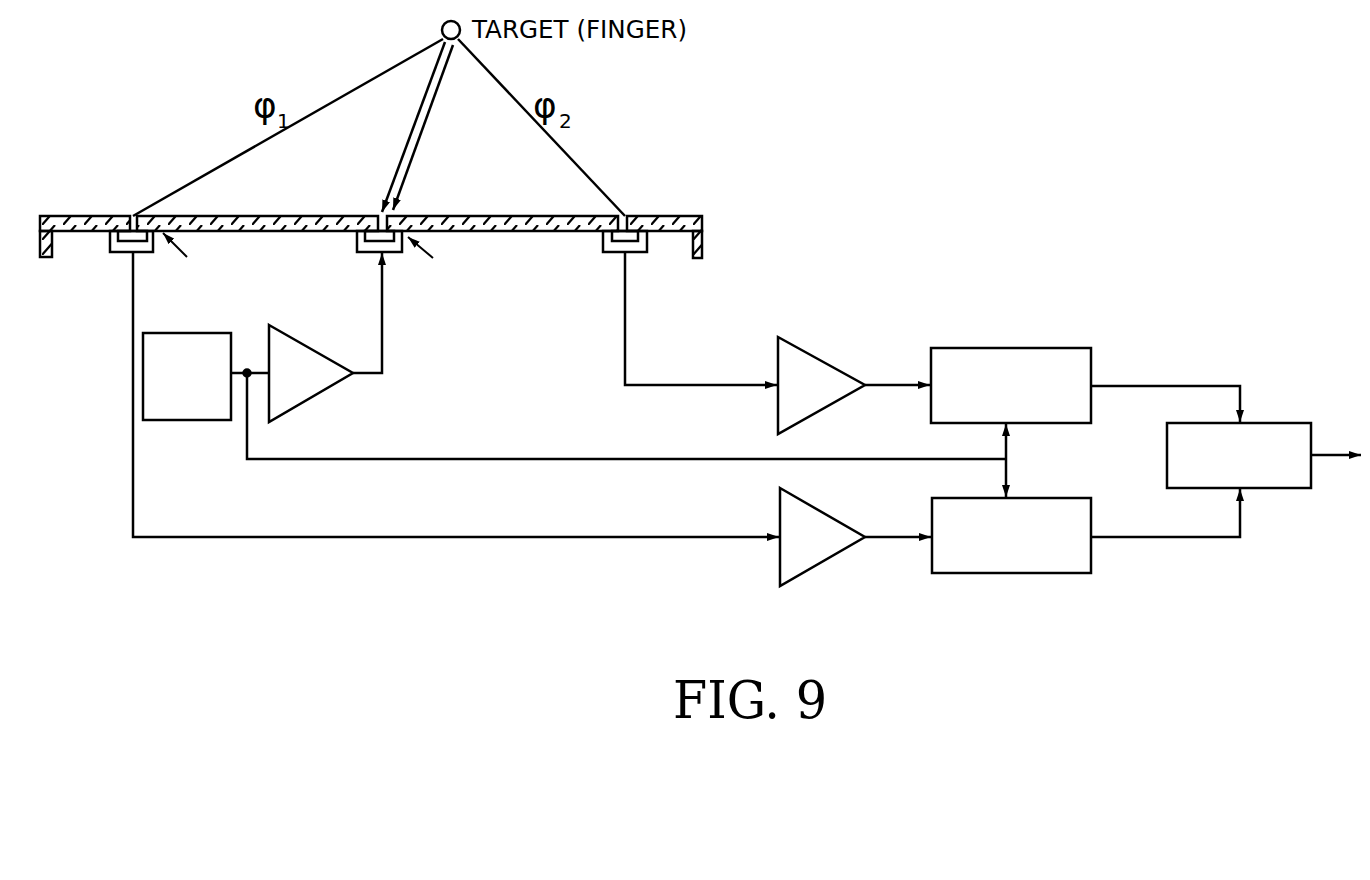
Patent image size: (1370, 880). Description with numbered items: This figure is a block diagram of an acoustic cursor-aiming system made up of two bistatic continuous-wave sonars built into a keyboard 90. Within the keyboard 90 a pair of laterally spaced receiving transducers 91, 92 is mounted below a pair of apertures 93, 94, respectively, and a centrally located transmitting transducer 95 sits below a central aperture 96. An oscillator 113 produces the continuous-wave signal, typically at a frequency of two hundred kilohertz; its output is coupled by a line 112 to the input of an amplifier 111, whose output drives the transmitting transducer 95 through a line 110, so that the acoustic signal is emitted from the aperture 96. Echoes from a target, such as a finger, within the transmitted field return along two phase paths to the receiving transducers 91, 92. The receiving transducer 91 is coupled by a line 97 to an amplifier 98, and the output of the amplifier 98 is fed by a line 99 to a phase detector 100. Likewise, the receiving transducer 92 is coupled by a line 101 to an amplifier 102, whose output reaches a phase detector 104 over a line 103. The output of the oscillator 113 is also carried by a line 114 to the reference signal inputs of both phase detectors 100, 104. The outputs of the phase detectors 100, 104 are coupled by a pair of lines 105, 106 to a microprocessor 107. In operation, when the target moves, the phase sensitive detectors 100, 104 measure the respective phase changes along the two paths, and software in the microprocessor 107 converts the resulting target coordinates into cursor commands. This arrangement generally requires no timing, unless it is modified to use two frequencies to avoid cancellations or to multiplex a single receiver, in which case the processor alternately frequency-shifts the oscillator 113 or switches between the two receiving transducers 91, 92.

The keyboard 90 is at (660, 210).
The receiving transducer 91 is at (117, 255).
The receiving transducer 92 is at (640, 252).
The aperture 93 is at (130, 215).
The aperture 94 is at (625, 216).
The transmitting transducer 95 is at (337, 371).
The aperture 96 is at (380, 213).
The line 97 is at (557, 537).
The amplifier 98 is at (810, 572).
The line 99 is at (893, 535).
The phase detector 100 is at (987, 573).
The line 101 is at (692, 387).
The amplifier 102 is at (808, 348).
The line 103 is at (892, 383).
The phase detector 104 is at (997, 348).
The line 105 is at (1157, 386).
The line 106 is at (1155, 537).
The microprocessor 107 is at (1260, 488).
The line 110 is at (382, 322).
The amplifier 111 is at (320, 393).
The line 112 is at (240, 370).
The oscillator 113 is at (174, 420).
The line 114 is at (635, 459).